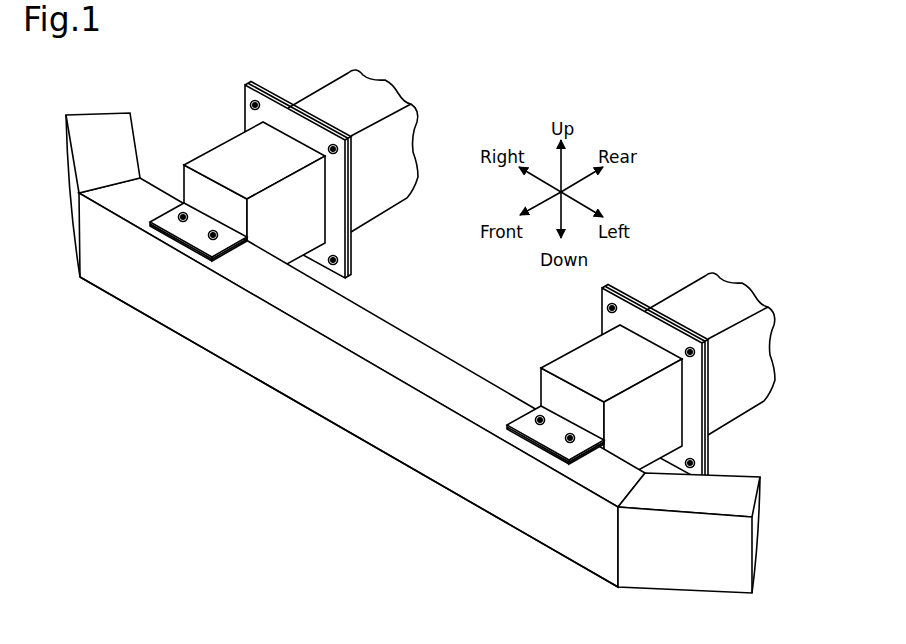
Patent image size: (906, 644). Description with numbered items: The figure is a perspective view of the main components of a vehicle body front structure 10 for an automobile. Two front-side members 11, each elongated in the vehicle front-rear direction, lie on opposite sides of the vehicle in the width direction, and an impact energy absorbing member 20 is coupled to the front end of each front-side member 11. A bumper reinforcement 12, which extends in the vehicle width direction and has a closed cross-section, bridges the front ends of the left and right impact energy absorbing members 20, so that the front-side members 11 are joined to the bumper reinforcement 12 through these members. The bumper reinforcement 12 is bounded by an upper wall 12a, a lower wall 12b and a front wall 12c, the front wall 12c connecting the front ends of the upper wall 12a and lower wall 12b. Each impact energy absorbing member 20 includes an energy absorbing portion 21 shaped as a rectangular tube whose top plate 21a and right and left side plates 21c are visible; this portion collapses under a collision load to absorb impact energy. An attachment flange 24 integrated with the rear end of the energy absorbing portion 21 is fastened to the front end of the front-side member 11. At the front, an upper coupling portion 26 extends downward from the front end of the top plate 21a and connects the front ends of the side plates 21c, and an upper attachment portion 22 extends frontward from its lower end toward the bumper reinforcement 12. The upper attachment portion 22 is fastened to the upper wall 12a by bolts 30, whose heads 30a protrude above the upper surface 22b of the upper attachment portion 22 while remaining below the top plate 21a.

The vehicle body front structure 10 is at (338, 477).
The front-side member 11 is at (388, 82).
The bumper reinforcement 12 is at (413, 353).
The upper wall 12a is at (395, 353).
The lower wall 12b is at (420, 477).
The front wall 12c is at (275, 368).
The impact energy absorbing member 20 is at (212, 146).
The energy absorbing portion 21 is at (472, 280).
The top plate 21a is at (273, 138).
The side plate 21c is at (285, 240).
The upper attachment portion 22 is at (378, 342).
The upper surface 22b is at (222, 250).
The attachment flange 24 is at (352, 160).
The upper coupling portion 26 is at (193, 182).
The bolt 30 is at (378, 299).
The head 30a is at (194, 216).